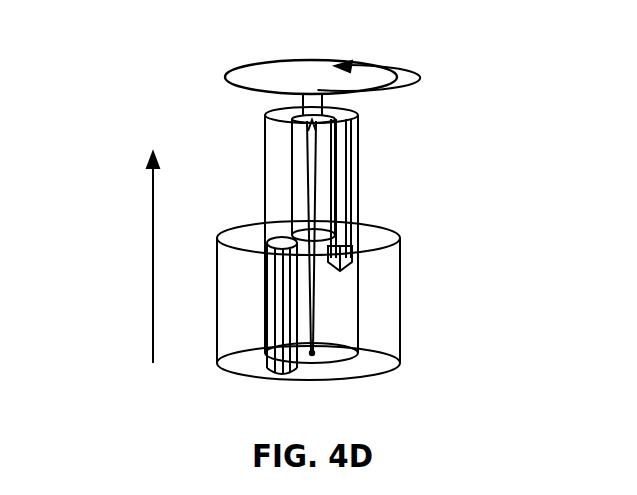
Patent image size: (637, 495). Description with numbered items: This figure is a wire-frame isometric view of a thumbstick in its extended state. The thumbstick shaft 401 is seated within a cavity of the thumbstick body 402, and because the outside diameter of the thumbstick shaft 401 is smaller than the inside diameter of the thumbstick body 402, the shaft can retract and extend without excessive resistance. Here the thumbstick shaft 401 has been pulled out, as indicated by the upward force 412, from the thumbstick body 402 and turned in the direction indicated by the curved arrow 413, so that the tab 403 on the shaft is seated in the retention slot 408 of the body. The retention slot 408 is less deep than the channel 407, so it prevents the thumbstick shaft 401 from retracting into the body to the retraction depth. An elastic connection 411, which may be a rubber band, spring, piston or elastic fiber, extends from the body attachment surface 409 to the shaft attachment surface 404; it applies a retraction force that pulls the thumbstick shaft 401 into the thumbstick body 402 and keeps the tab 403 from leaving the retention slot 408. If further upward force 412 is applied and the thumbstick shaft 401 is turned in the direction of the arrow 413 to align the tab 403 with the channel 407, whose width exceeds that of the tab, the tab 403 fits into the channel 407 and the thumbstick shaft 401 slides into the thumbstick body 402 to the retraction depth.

The thumbstick shaft 401 is at (360, 174).
The thumbstick body 402 is at (403, 330).
The tab 403 is at (355, 133).
The shaft attachment surface 404 is at (291, 148).
The channel 407 is at (278, 293).
The retention slot 408 is at (356, 254).
The body attachment surface 409 is at (313, 354).
The elastic connection 411 is at (358, 315).
The upward force 412 is at (153, 221).
The curved arrow 413 is at (393, 76).